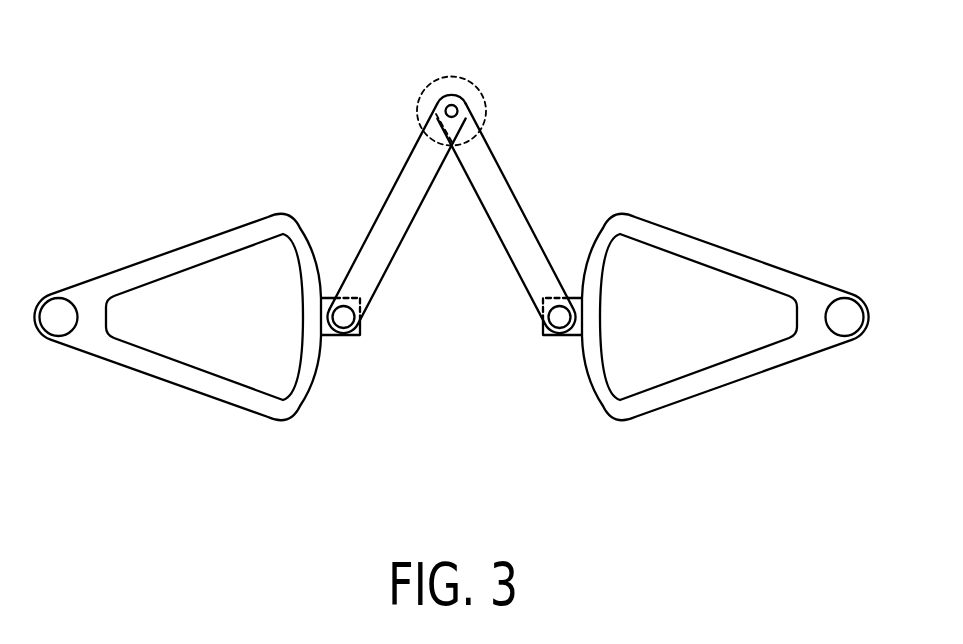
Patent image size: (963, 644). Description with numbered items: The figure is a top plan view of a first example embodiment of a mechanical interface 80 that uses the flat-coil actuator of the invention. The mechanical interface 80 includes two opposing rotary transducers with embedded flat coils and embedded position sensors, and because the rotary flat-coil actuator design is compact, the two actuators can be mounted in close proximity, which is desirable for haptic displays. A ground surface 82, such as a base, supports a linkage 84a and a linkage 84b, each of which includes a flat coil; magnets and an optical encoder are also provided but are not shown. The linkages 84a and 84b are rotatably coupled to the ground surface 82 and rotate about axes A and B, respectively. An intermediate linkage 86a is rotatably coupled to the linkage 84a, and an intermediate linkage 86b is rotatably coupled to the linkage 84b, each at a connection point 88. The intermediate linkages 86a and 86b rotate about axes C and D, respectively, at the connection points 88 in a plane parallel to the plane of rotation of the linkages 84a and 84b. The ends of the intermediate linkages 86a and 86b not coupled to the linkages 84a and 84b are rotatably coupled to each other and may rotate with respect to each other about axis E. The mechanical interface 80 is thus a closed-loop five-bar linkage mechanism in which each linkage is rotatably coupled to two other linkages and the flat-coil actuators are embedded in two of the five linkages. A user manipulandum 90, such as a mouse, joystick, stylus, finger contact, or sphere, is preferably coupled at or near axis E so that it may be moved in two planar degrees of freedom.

The mechanical interface 80 is at (256, 58).
The ground surface 82 is at (463, 463).
The linkage 84a is at (177, 335).
The linkage 84b is at (706, 334).
The intermediate linkage 86a is at (396, 214).
The intermediate linkage 86b is at (506, 218).
The connection point 88 is at (343, 338).
The user manipulandum 90 is at (425, 87).
The axis A is at (59, 316).
The axis B is at (844, 316).
The axis C is at (344, 317).
The axis D is at (560, 317).
The axis E is at (452, 111).